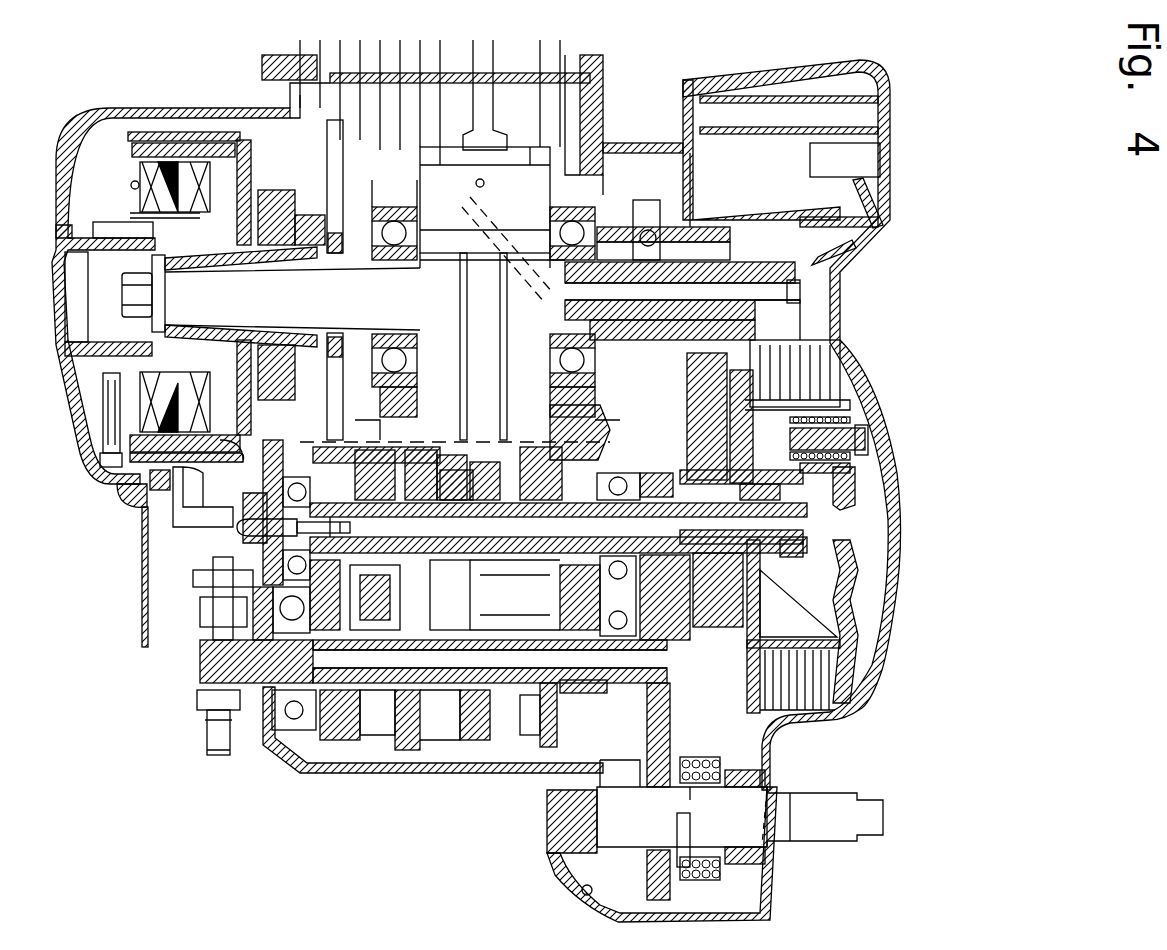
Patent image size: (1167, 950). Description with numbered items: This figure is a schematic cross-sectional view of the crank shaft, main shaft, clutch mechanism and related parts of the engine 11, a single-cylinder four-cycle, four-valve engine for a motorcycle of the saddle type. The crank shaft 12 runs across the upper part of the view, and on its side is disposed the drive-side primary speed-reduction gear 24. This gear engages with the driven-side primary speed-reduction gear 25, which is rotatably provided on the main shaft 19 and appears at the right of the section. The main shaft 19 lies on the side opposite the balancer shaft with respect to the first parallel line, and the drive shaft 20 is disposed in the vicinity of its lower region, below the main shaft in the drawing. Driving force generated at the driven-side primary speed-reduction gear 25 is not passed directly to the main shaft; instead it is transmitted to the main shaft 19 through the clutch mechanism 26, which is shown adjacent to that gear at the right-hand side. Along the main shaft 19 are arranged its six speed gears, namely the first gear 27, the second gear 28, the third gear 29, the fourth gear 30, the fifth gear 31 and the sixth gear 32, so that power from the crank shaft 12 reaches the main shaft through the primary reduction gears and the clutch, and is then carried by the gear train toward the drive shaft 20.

The engine 11 is at (930, 262).
The crank shaft 12 is at (620, 273).
The main shaft 19 is at (450, 457).
The drive shaft 20 is at (370, 685).
The drive-side primary speed-reduction gear 24 is at (800, 297).
The driven-side primary speed-reduction gear 25 is at (860, 407).
The clutch mechanism 26 is at (866, 469).
The first gear 27 is at (540, 453).
The second gear 28 is at (360, 468).
The third gear 29 is at (477, 462).
The fourth gear 30 is at (433, 467).
The fifth gear 31 is at (325, 470).
The sixth gear 32 is at (598, 540).